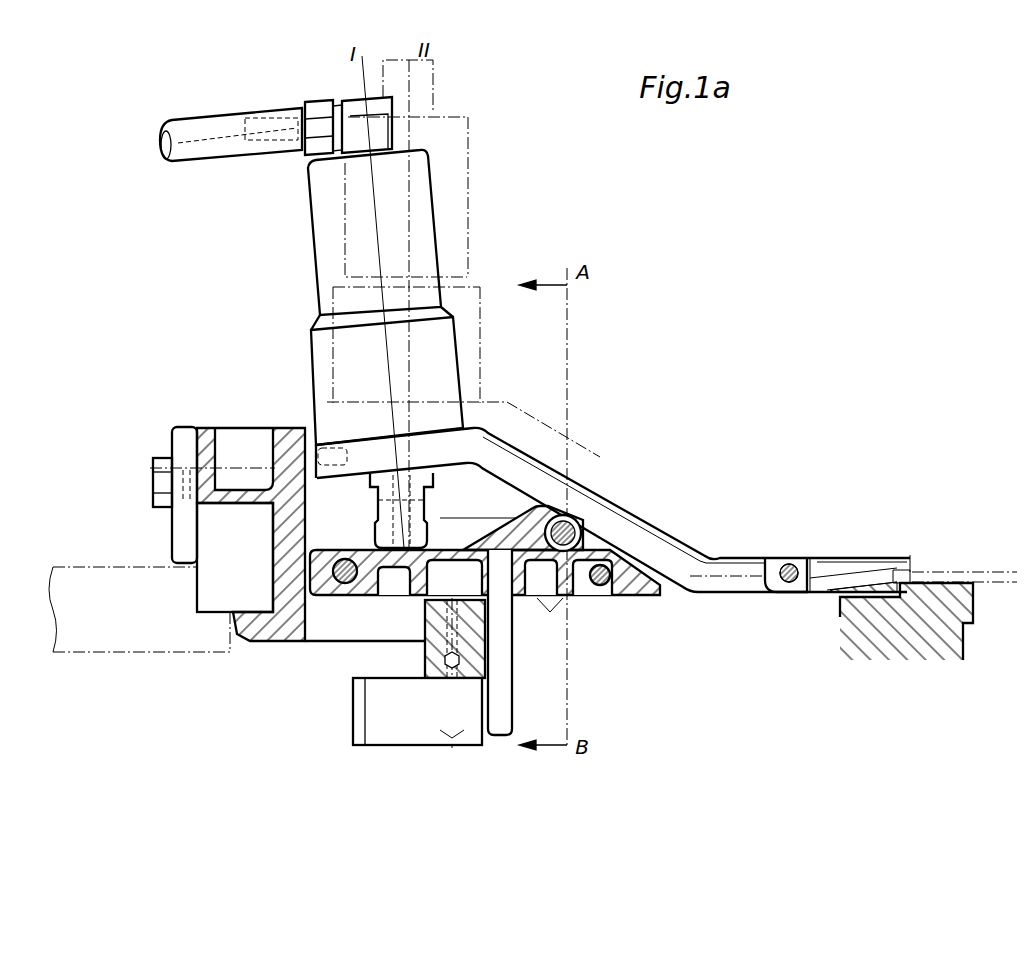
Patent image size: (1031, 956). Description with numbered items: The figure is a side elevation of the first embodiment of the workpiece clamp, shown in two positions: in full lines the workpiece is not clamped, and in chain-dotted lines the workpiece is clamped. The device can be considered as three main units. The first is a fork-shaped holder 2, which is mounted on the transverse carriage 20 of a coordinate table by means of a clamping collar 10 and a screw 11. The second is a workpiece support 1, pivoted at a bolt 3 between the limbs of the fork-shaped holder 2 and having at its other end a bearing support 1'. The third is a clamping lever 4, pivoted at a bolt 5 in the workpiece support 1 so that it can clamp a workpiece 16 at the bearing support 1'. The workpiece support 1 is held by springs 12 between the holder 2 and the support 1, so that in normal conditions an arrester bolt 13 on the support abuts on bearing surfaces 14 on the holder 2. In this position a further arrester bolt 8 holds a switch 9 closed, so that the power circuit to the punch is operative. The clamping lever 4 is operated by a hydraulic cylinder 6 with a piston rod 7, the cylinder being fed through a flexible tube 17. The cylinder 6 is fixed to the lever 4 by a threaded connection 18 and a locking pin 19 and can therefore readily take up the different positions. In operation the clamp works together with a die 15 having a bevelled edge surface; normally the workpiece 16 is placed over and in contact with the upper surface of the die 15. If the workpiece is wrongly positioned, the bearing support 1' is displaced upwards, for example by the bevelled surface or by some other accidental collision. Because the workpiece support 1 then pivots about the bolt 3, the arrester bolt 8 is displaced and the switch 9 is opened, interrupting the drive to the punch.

The workpiece support 1 is at (482, 614).
The bearing support 1' is at (853, 596).
The fork-shaped holder 2 is at (255, 445).
The bolt 3 is at (343, 590).
The clamping lever 4 is at (617, 518).
The bolt 5 is at (789, 562).
The hydraulic cylinder 6 is at (420, 190).
The piston rod 7 is at (375, 525).
The arrester bolt 8 is at (505, 708).
The switch 9 is at (380, 712).
The clamping collar 10 is at (178, 548).
The screw 11 is at (160, 485).
The springs 12 is at (522, 618).
The arrester bolt 13 is at (566, 521).
The bearing surfaces 14 is at (531, 538).
The die 15 is at (945, 590).
The workpiece 16 is at (993, 577).
The flexible tube 17 is at (220, 153).
The threaded connection 18 is at (465, 428).
The locking pin 19 is at (318, 447).
The transverse carriage 20 is at (217, 527).